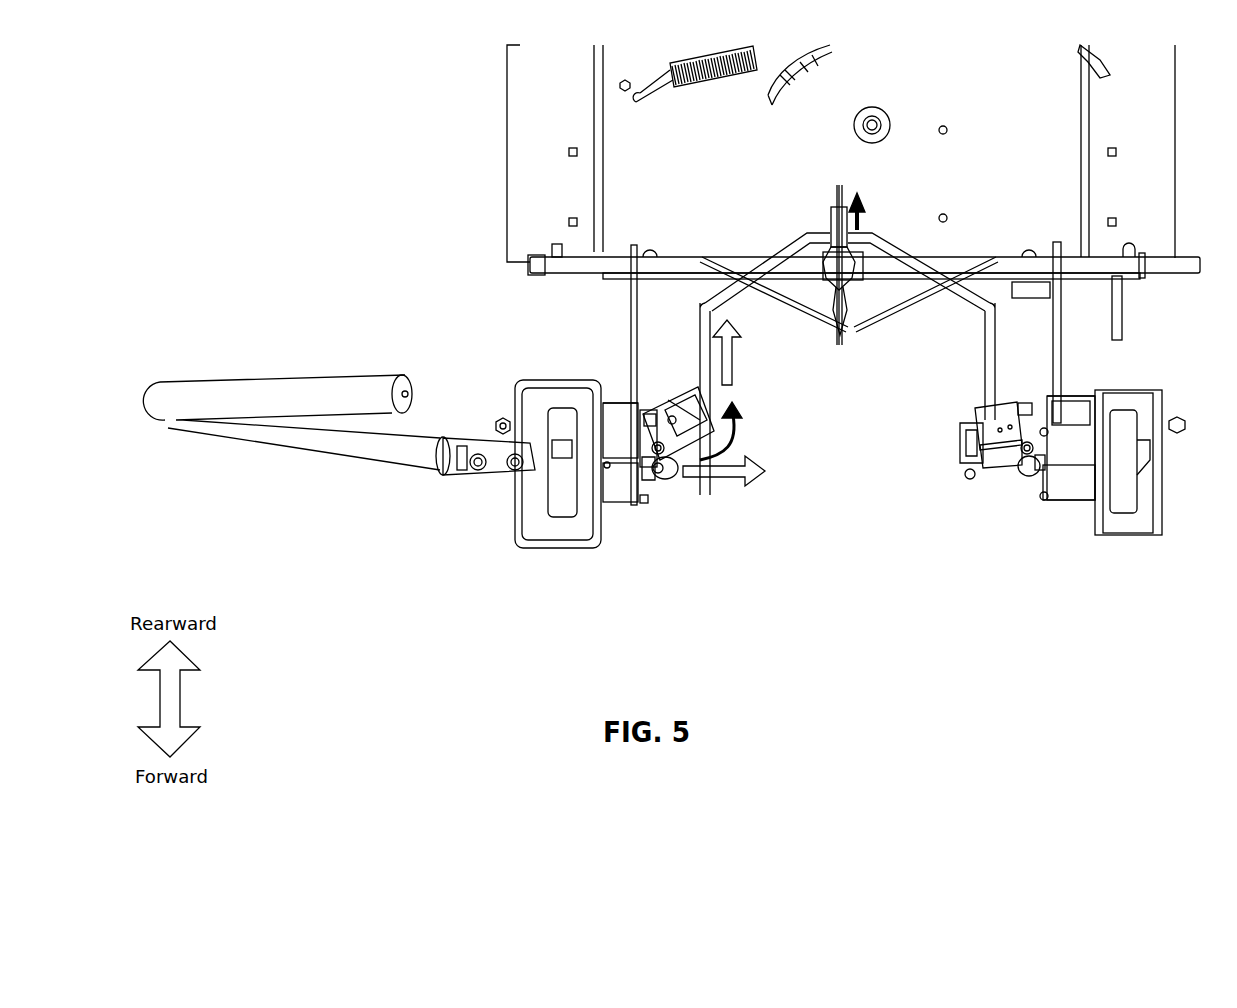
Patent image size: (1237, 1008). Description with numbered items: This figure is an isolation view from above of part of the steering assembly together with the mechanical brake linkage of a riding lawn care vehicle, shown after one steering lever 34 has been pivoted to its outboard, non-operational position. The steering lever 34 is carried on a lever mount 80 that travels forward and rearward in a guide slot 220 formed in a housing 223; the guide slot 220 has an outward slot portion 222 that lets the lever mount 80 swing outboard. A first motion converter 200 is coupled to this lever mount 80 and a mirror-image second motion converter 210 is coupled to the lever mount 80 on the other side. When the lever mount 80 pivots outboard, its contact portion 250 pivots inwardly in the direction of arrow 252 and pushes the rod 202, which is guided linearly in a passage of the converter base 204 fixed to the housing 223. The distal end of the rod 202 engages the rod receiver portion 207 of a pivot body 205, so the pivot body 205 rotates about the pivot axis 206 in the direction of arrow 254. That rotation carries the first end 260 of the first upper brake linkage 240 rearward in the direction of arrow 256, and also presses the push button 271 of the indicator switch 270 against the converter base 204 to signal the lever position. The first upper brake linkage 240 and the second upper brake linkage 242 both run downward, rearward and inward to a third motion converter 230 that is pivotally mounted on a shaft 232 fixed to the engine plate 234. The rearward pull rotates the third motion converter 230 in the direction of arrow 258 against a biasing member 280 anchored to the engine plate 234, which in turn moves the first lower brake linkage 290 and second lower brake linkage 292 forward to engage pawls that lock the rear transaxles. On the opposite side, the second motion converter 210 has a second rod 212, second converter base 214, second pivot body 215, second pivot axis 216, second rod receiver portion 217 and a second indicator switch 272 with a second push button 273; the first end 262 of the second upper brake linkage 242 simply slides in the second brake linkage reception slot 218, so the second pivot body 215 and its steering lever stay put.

The steering lever 34 is at (237, 388).
The lever mount 80 is at (488, 472).
The first motion converter 200 is at (644, 528).
The rod 202 is at (618, 466).
The converter base 204 is at (610, 407).
The pivot body 205 is at (683, 430).
The pivot axis 206 is at (660, 445).
The rod receiver portion 207 is at (672, 470).
The second motion converter 210 is at (1024, 527).
The second rod 212 is at (1078, 460).
The second converter base 214 is at (1075, 480).
The second pivot body 215 is at (985, 455).
The second pivot axis 216 is at (1028, 447).
The second rod receiver portion 217 is at (1025, 470).
The second brake linkage reception slot 218 is at (958, 455).
The guide slot 220 is at (548, 507).
The outward slot portion 222 is at (1152, 468).
The housing 223 is at (545, 525).
The third motion converter 230 is at (841, 240).
The shaft 232 is at (1162, 265).
The engine plate 234 is at (1067, 150).
The first upper brake linkage 240 is at (767, 268).
The second upper brake linkage 242 is at (935, 288).
The contact portion 250 is at (570, 465).
The arrow 252 is at (735, 470).
The arrow 254 is at (740, 433).
The arrow 256 is at (731, 362).
The arrow 258 is at (863, 213).
The first end 260 is at (683, 420).
The first end 262 is at (952, 432).
The indicator switch 270 is at (683, 375).
The push button 271 is at (643, 415).
The second indicator switch 272 is at (968, 410).
The second push button 273 is at (1026, 405).
The biasing member 280 is at (828, 222).
The first lower brake linkage 290 is at (795, 298).
The second lower brake linkage 292 is at (877, 303).